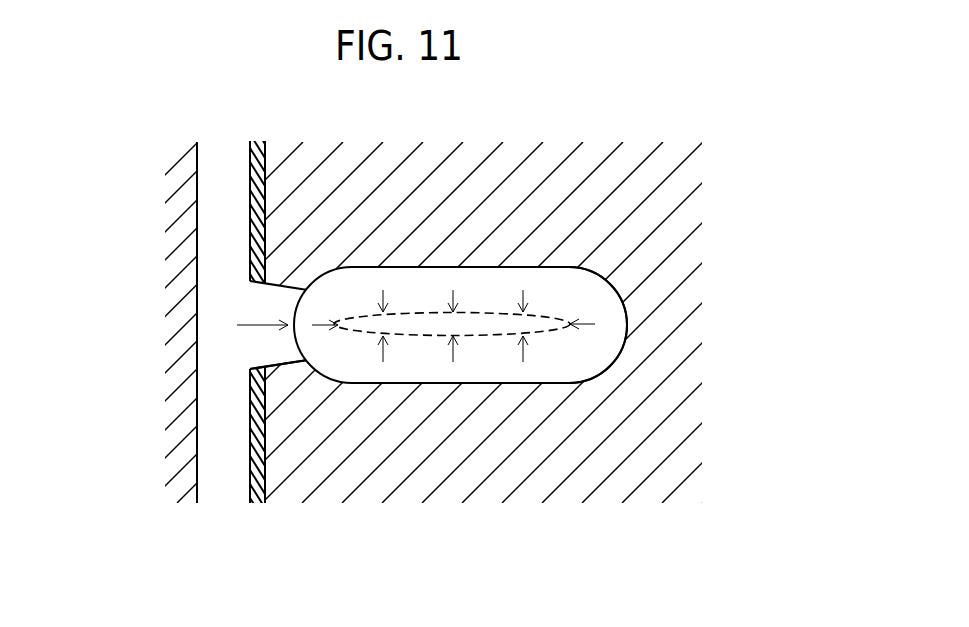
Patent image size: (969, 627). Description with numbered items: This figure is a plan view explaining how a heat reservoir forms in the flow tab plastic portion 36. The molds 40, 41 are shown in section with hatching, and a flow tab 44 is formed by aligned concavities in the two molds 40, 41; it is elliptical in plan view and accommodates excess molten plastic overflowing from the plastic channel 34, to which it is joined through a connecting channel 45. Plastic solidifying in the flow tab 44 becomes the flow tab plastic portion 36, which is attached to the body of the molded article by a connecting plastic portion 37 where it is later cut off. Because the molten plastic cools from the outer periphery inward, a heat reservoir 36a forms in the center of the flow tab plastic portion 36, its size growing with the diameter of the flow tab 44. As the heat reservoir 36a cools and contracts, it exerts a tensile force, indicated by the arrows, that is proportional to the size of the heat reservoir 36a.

The plastic channel 34 is at (223, 430).
The flow tab plastic portion 36 is at (488, 265).
The heat reservoir 36a is at (495, 325).
The connecting plastic portion 37 is at (281, 347).
The mold 40 is at (484, 321).
The mold 41 is at (650, 219).
The flow tab 44 is at (627, 323).
The connecting channel 45 is at (303, 362).